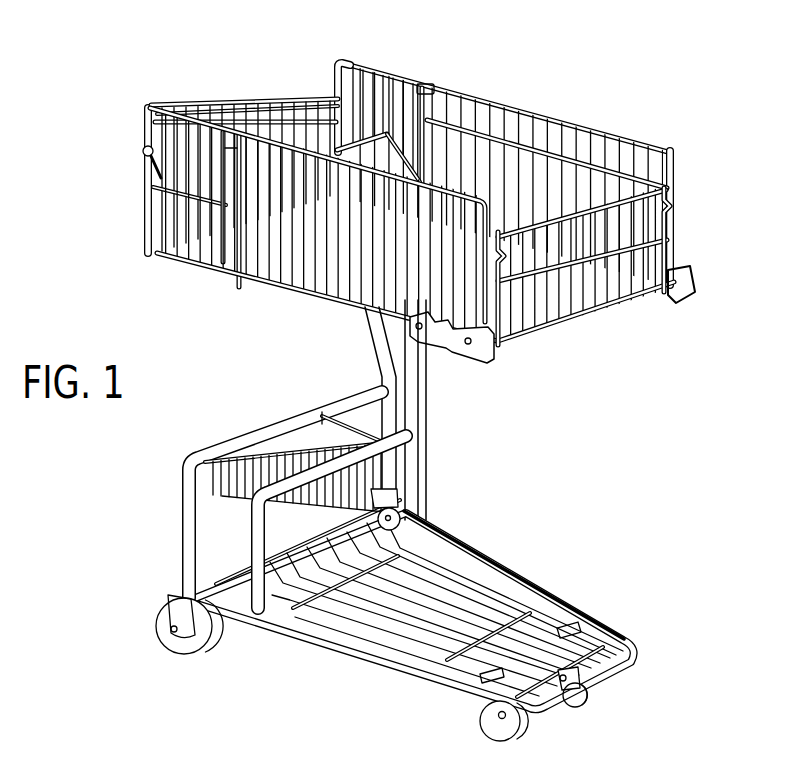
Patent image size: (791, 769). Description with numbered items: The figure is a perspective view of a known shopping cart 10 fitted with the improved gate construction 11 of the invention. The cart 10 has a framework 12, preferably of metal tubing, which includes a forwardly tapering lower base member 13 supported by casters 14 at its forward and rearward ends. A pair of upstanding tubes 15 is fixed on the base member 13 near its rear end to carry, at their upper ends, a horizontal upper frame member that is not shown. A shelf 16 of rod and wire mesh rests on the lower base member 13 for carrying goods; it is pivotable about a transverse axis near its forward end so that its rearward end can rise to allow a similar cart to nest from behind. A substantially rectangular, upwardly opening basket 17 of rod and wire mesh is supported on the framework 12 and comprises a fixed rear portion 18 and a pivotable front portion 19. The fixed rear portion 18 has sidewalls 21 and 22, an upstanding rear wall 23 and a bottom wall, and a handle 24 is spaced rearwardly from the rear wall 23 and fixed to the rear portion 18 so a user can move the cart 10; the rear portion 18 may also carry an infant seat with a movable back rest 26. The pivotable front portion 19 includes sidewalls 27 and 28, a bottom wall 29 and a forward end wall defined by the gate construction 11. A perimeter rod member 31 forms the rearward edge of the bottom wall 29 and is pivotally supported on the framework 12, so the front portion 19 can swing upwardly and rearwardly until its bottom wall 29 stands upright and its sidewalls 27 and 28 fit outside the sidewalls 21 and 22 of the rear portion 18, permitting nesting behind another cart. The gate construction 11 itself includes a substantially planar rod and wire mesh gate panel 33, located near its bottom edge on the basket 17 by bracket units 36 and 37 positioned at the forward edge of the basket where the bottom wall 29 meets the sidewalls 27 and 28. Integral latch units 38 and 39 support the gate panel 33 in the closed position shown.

The shopping cart 10 is at (405, 380).
The gate construction 11 is at (409, 212).
The framework 12 is at (176, 489).
The lower base member 13 is at (373, 648).
The casters 14 is at (188, 659).
The upstanding tubes 15 is at (435, 466).
The shelf 16 is at (446, 554).
The basket 17 is at (451, 85).
The fixed rear portion 18 is at (359, 65).
The pivotable front portion 19 is at (606, 129).
The sidewall 21 is at (147, 211).
The sidewall 22 is at (398, 80).
The rear wall 23 is at (292, 104).
The handle 24 is at (277, 128).
The movable back rest 26 is at (383, 130).
The sidewall 27 is at (338, 270).
The sidewall 28 is at (550, 113).
The bottom wall 29 is at (296, 298).
The perimeter rod member 31 is at (236, 290).
The gate panel 33 is at (595, 300).
The bracket unit 36 is at (463, 364).
The bracket unit 37 is at (693, 277).
The latch unit 38 is at (516, 260).
The latch unit 39 is at (681, 195).